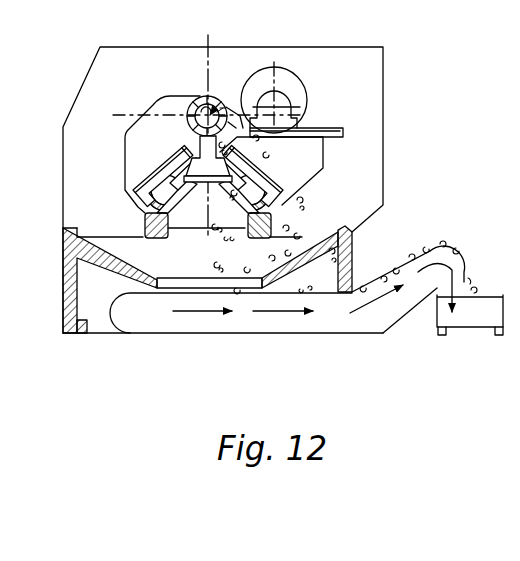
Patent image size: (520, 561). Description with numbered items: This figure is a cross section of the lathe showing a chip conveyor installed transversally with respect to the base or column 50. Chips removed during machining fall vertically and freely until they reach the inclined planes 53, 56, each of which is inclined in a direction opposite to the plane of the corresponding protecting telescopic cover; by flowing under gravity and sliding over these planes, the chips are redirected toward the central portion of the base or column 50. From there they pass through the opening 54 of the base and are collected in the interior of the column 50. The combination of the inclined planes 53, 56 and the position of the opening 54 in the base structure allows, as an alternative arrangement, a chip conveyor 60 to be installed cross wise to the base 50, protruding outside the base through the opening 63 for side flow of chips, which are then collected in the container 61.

The base or column 50 is at (326, 283).
The inclined plane 53 is at (113, 250).
The opening 54 is at (170, 283).
The inclined plane 56 is at (312, 244).
The chip conveyor 60 is at (430, 254).
The container 61 is at (470, 317).
The opening 63 is at (357, 288).